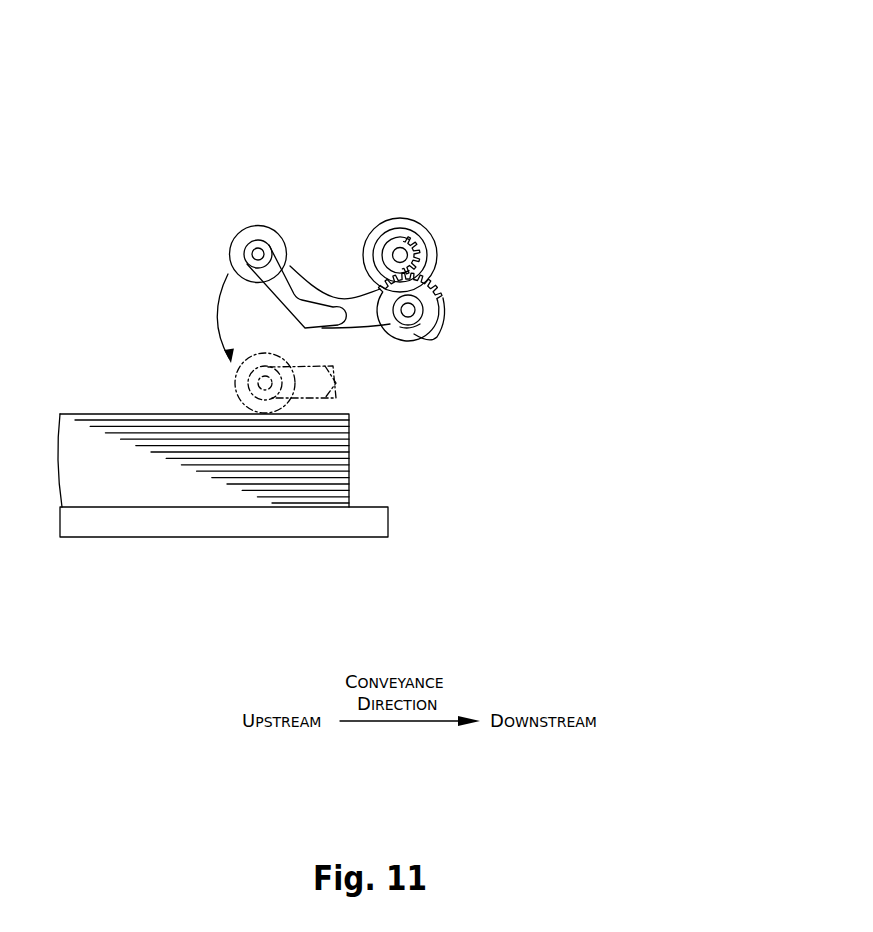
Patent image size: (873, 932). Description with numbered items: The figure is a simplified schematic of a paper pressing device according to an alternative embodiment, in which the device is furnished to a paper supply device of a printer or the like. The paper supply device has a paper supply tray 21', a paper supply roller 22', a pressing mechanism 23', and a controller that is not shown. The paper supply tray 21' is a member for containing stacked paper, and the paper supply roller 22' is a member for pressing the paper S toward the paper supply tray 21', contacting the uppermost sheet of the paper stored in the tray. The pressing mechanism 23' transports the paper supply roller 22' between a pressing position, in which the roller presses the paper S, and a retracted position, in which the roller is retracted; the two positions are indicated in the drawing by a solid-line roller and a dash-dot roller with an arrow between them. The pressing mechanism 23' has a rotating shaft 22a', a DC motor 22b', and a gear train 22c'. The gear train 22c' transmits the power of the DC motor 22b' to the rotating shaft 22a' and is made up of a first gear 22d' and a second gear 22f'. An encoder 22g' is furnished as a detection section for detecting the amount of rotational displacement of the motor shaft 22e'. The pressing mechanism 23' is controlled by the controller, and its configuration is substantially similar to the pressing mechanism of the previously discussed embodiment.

The paper S is at (97, 414).
The paper supply tray 21' is at (269, 532).
The paper supply roller 22' is at (234, 320).
The rotating shaft 22a' is at (416, 292).
The DC motor 22b' is at (508, 208).
The gear train 22c' is at (481, 252).
The first gear 22d' is at (397, 337).
The motor shaft 22e' is at (465, 209).
The second gear 22f' is at (478, 302).
The encoder 22g' is at (434, 209).
The pressing mechanism 23' is at (378, 219).